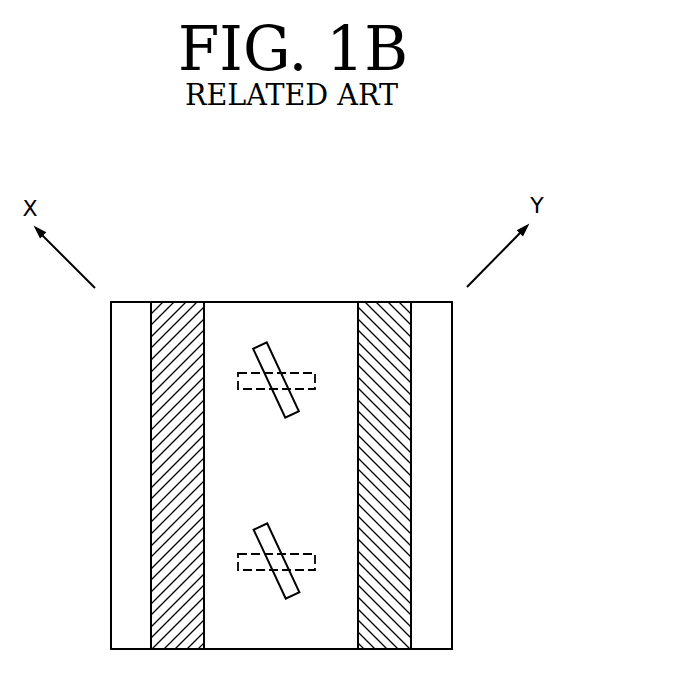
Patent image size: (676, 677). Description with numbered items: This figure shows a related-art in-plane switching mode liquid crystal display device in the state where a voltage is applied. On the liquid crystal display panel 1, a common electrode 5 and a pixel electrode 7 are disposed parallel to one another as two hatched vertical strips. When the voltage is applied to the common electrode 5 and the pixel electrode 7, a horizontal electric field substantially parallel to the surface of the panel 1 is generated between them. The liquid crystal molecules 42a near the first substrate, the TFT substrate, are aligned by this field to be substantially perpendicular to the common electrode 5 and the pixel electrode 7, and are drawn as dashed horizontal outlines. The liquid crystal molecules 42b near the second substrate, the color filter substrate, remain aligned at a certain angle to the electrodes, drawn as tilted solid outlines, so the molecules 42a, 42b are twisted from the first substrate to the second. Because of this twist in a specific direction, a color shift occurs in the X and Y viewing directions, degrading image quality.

The liquid crystal display panel 1 is at (523, 297).
The common electrode 5 is at (177, 312).
The pixel electrode 7 is at (391, 312).
The liquid crystal molecules near the first substrate 42a is at (310, 371).
The liquid crystal molecules near the second substrate 42b is at (261, 341).